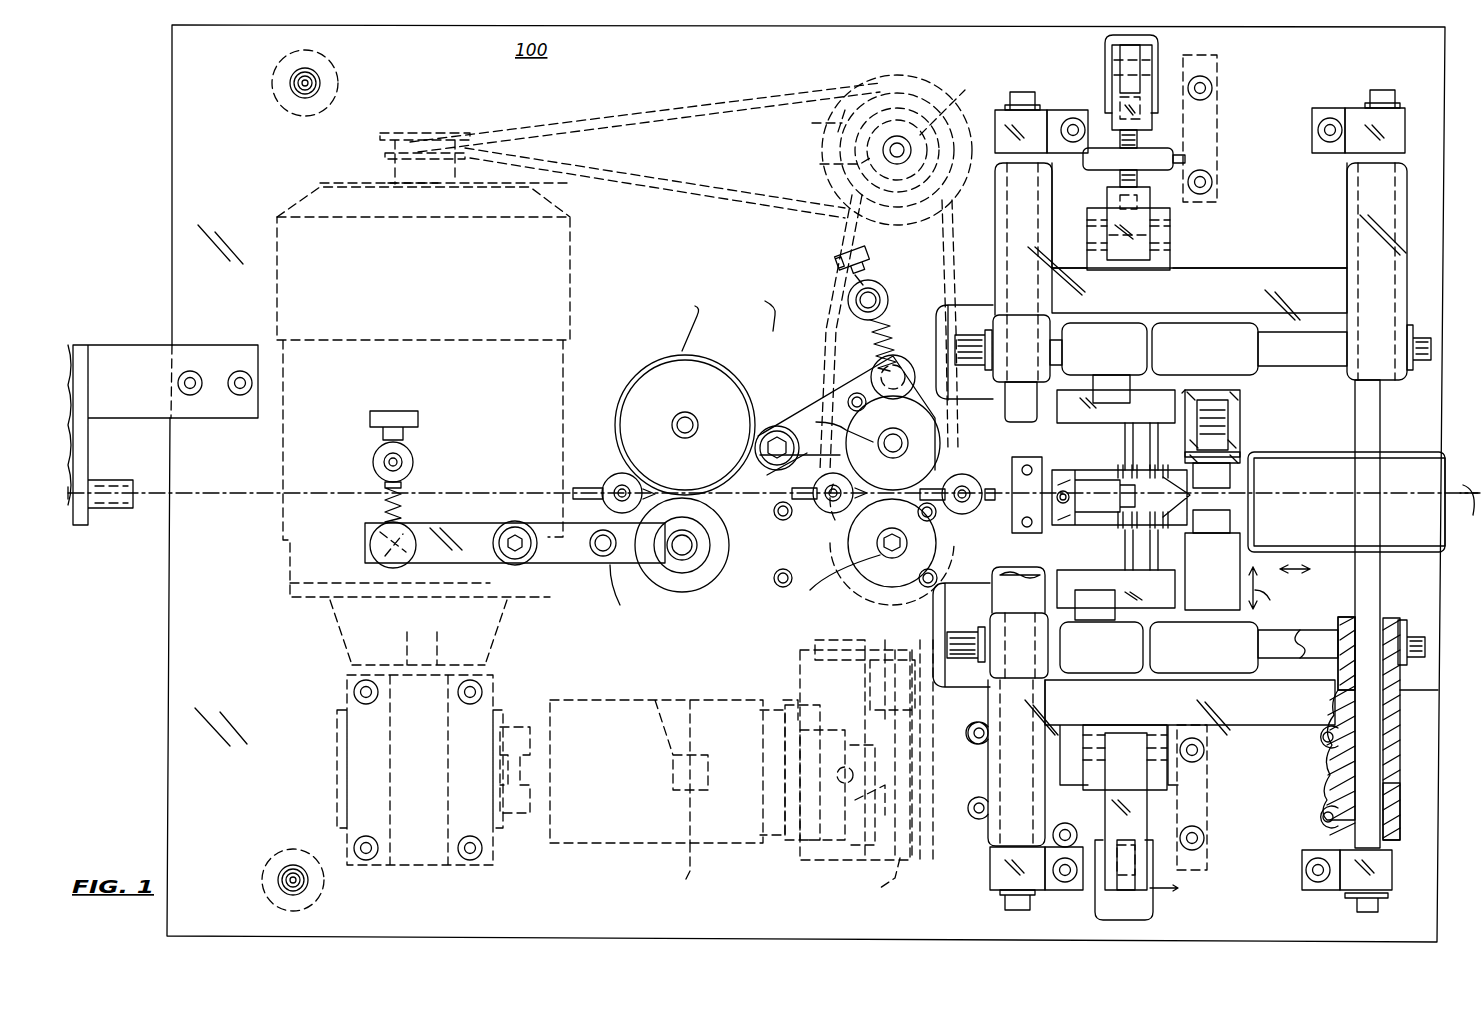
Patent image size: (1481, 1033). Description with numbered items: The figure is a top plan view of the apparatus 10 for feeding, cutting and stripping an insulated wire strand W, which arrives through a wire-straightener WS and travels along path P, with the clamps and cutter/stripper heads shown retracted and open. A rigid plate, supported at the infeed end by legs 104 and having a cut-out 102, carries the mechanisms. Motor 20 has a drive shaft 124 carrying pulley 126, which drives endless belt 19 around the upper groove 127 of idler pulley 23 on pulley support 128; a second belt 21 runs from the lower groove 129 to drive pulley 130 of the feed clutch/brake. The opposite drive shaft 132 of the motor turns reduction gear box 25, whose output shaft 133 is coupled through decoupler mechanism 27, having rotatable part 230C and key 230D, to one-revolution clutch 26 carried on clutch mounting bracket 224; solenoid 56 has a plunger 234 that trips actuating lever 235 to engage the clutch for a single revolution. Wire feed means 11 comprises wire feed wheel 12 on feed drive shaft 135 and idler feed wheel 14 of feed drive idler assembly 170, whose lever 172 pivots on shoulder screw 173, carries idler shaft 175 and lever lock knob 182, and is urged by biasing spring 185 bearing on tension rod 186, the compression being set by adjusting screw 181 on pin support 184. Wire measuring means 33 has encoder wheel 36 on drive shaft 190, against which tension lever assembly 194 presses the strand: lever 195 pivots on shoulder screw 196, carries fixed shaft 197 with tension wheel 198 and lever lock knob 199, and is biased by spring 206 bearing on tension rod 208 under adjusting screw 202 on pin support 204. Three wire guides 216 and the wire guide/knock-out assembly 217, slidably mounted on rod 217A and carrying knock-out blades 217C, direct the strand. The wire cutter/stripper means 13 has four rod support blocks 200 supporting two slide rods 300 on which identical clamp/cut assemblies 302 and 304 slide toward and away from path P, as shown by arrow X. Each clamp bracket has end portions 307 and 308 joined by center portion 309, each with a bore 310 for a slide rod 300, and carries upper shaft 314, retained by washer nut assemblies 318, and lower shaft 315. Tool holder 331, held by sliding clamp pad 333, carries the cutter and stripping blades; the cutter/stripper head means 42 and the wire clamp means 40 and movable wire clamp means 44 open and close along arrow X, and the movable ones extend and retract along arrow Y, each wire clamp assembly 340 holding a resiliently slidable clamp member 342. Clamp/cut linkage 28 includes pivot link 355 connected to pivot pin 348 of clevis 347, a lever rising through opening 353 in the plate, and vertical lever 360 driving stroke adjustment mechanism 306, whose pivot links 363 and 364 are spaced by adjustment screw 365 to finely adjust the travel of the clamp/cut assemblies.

The apparatus 10 is at (148, 701).
The legs 104 is at (280, 108).
The pulley 126 is at (383, 133).
The drive shaft 124 is at (391, 182).
The motor 20 is at (570, 247).
The endless flexible belt 19 is at (656, 110).
The idler pulley 23 is at (925, 91).
The pulley support 128 is at (954, 99).
The upper groove 127 is at (810, 122).
The lower groove 129 is at (827, 164).
The endless flexible belt 21 is at (842, 245).
The wire feed means 11 is at (780, 315).
The adjusting screw 181 is at (864, 260).
The pin support 184 is at (884, 287).
The biasing spring 185 is at (890, 320).
The tension rod 186 is at (904, 358).
The feed drive idler assembly 170 is at (823, 395).
The lever lock knob 182 is at (850, 395).
The wire measuring means 33 is at (683, 320).
The encoder wheel 36 is at (625, 384).
The encoder drive shaft 190 is at (681, 418).
The lever 172 is at (781, 428).
The idler feed wheel 14 is at (834, 427).
The shoulder screw 173 is at (771, 470).
The idler shaft 175 is at (897, 440).
The wire feed wheel 12 is at (900, 580).
The drive pulley 130 is at (838, 622).
The feed drive shaft 135 is at (828, 583).
The wire strand W is at (232, 453).
The wire-straightener WS is at (105, 510).
The adjusting screw 202 is at (380, 435).
The pin support 204 is at (373, 466).
The biasing spring 206 is at (385, 510).
The tension rod 208 is at (366, 561).
The tension lever assembly 194 is at (570, 578).
The shoulder screw 196 is at (522, 568).
The lever lock knob 199 is at (600, 557).
The lever 195 is at (632, 591).
The tension wheel 198 is at (698, 580).
The fixed shaft 197 is at (695, 553).
The wire guides 216 is at (618, 474).
The drive shaft 132 is at (472, 653).
The reduction gear box 25 is at (440, 868).
The output shaft 133 is at (512, 727).
The rotatable part 230C is at (580, 844).
The key 230D is at (655, 700).
The decoupler mechanism 27 is at (703, 867).
The one-revolution clutch 26 is at (808, 846).
The solenoid 56 is at (800, 663).
The plunger 234 is at (835, 775).
The actuating lever 235 is at (877, 799).
The clutch mounting bracket 224 is at (879, 881).
The slide rods 300 is at (1050, 154).
The rod support blocks 200 is at (1055, 110).
The wire cutter/stripper means 13 is at (1292, 114).
The clamp/cut assembly 304 is at (1290, 265).
The opening 353 is at (1160, 46).
The vertical lever 360 is at (1125, 65).
The pivot link 363 is at (1107, 90).
The adjustment screw 365 is at (1185, 160).
The stroke adjustment mechanism 306 is at (1205, 167).
The pivot link 364 is at (1157, 228).
The clevis 347 is at (1173, 255).
The cut-out 102 is at (975, 310).
The wire clamp means 40 is at (1360, 367).
The cutter/stripper head means 42 is at (1103, 498).
The movable wire clamp means 44 is at (1204, 498).
The sliding clamp pad 333 is at (1102, 497).
The tool holder 331 is at (1075, 425).
The knock-out blades 217C is at (1122, 462).
The wire guide/knock-out assembly 217 is at (1110, 530).
The rod 217A is at (1065, 541).
The upper shaft 314 is at (1315, 366).
The lower shaft 315 is at (1303, 637).
The wire clamp assembly 340 is at (1242, 418).
The clamp member 342 is at (1248, 483).
The path P is at (1466, 483).
The arrow X is at (1265, 590).
The arrow Y is at (1305, 572).
The washer nut assemblies 318 is at (1416, 347).
The center portion 309 is at (1190, 732).
The clamp/cut assembly 302 is at (1281, 736).
The bore 310 is at (1393, 762).
The end portion 307 is at (1398, 820).
The end portion 308 is at (988, 775).
The pivot pin 348 is at (1070, 822).
The pivot link 355 is at (1147, 855).
The clamp/cut linkage 28 is at (1186, 887).